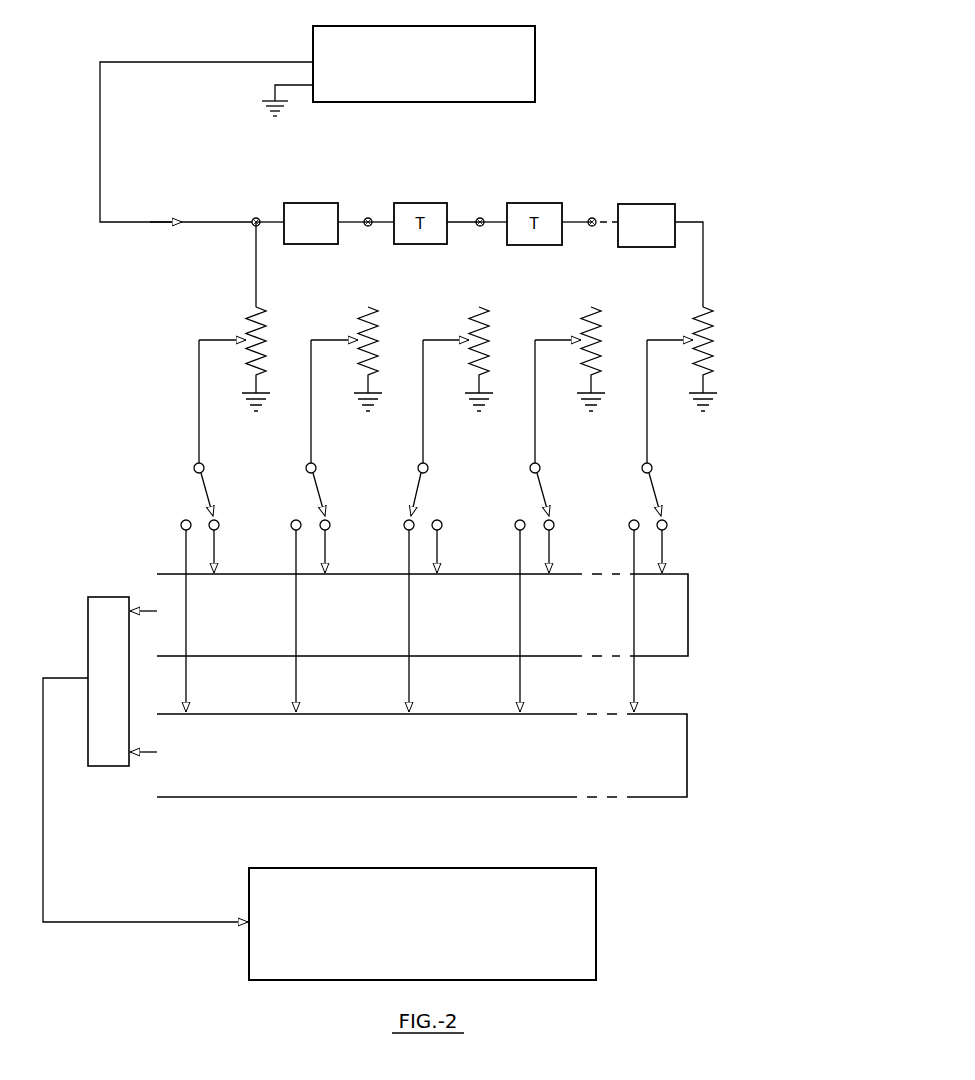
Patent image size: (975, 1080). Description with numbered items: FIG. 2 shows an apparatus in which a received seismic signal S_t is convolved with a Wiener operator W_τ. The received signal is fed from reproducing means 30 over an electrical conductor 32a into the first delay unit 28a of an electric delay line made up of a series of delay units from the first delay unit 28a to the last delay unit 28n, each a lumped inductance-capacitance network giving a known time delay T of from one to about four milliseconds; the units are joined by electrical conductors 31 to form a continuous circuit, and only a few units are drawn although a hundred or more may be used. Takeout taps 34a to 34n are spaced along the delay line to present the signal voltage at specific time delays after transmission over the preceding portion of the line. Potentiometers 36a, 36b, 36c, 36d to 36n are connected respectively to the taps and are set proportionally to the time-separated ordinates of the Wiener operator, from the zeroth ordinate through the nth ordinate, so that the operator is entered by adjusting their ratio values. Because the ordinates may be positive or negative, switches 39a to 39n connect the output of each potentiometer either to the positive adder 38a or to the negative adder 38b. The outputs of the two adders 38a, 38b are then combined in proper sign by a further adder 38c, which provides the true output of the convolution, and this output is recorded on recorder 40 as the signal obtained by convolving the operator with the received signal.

The reproducing means 30 is at (535, 50).
The electrical conductor 32a is at (167, 62).
The first delay unit 28a is at (312, 203).
The last delay unit 28n is at (651, 204).
The electrical conductor 31 is at (353, 222).
The first takeout tap 34a is at (256, 271).
The last takeout tap 34n is at (703, 278).
The potentiometer 36a is at (243, 328).
The potentiometer 36b is at (354, 328).
The potentiometer 36c is at (466, 328).
The potentiometer 36d is at (578, 328).
The potentiometer 36n is at (690, 328).
The switch 39a is at (203, 498).
The switch 39n is at (655, 497).
The positive adder 38a is at (688, 620).
The negative adder 38b is at (687, 765).
The adder 38c is at (107, 766).
The recorder 40 is at (596, 928).